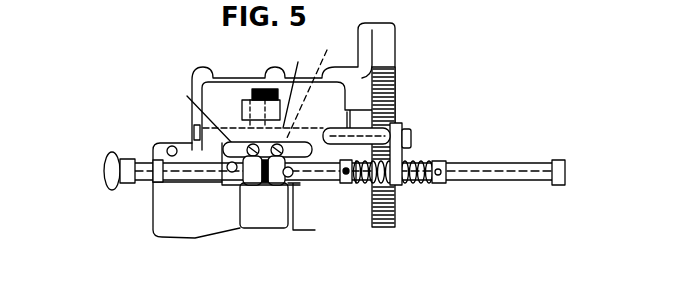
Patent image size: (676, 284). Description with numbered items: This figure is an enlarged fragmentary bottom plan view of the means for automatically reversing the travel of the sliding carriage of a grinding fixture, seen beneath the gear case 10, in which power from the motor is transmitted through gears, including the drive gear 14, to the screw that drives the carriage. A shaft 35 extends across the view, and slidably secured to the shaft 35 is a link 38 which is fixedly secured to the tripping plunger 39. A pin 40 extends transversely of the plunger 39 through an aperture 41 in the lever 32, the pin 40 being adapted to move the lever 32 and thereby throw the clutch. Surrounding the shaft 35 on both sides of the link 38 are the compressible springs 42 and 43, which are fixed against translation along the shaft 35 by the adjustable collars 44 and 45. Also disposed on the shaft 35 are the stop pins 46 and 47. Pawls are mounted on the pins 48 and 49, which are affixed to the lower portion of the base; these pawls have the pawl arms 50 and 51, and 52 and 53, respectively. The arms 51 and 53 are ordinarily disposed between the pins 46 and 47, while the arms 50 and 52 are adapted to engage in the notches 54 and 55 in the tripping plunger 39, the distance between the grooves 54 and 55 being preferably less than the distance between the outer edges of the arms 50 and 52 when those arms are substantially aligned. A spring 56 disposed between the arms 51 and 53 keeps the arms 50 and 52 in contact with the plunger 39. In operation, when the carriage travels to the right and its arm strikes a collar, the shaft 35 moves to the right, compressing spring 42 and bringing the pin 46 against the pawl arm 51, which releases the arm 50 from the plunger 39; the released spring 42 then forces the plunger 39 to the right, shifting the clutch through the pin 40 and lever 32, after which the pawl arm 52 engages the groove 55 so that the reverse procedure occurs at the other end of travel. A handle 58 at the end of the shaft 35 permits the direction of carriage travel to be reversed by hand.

The gear case 10 is at (233, 78).
The drive gear 14 is at (395, 73).
The lever 32 is at (300, 86).
The shaft 35 is at (505, 184).
The link 38 is at (405, 152).
The tripping plunger 39 is at (352, 140).
The pin 40 is at (252, 106).
The aperture 41 is at (317, 86).
The compressible spring 42 is at (356, 186).
The compressible spring 43 is at (420, 186).
The adjustable collar 44 is at (342, 184).
The adjustable collar 45 is at (440, 185).
The stop pin 46 is at (198, 200).
The stop pin 47 is at (295, 185).
The pin 48 is at (222, 184).
The pin 49 is at (305, 158).
The pawl arm 50 is at (222, 158).
The pawl arm 51 is at (238, 185).
The pawl arm 52 is at (318, 150).
The pawl arm 53 is at (272, 187).
The notch 54 is at (187, 96).
The notch 55 is at (300, 141).
The spring 56 is at (254, 186).
The handle 58 is at (105, 171).